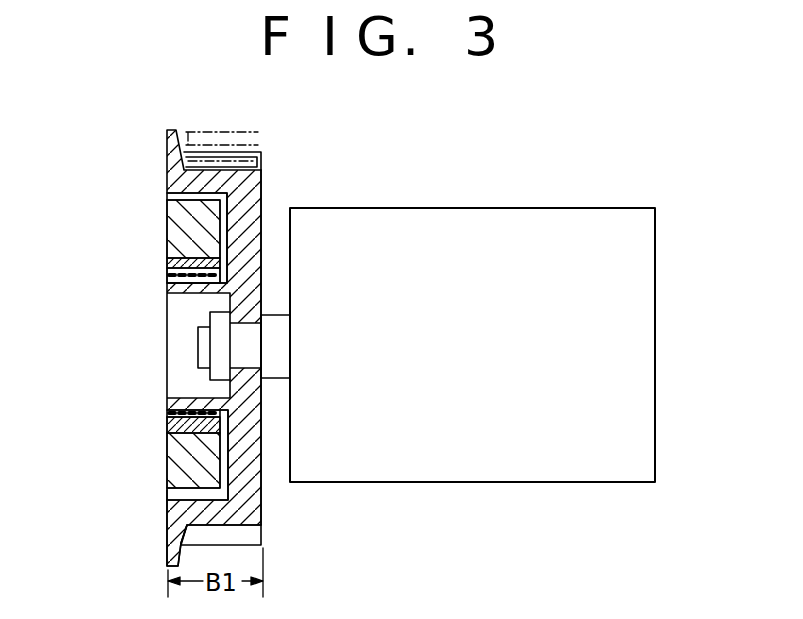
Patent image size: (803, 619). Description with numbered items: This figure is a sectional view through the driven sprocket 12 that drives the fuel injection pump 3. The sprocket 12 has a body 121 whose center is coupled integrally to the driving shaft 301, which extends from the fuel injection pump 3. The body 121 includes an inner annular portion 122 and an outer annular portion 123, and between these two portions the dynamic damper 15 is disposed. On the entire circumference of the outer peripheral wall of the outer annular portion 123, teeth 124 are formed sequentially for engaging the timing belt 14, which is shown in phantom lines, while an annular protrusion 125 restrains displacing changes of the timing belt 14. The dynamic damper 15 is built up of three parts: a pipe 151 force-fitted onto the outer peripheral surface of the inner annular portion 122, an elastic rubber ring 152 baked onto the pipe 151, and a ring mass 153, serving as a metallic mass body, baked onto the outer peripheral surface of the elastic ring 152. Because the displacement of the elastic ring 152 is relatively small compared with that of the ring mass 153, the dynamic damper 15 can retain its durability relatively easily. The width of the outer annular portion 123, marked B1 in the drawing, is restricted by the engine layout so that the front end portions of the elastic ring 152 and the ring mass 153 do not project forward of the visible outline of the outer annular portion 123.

The fuel injection pump 3 is at (535, 245).
The driving shaft 301 is at (277, 332).
The driven sprocket 12 is at (289, 172).
The body 121 is at (252, 238).
The inner annular portion 122 is at (170, 405).
The outer annular portion 123 is at (167, 508).
The teeth 124 is at (262, 533).
The annular protrusion 125 is at (168, 552).
The timing belt 14 is at (258, 133).
The dynamic damper 15 is at (137, 230).
The pipe 151 is at (167, 278).
The elastic rubber ring 152 is at (166, 267).
The ring mass 153 is at (180, 215).